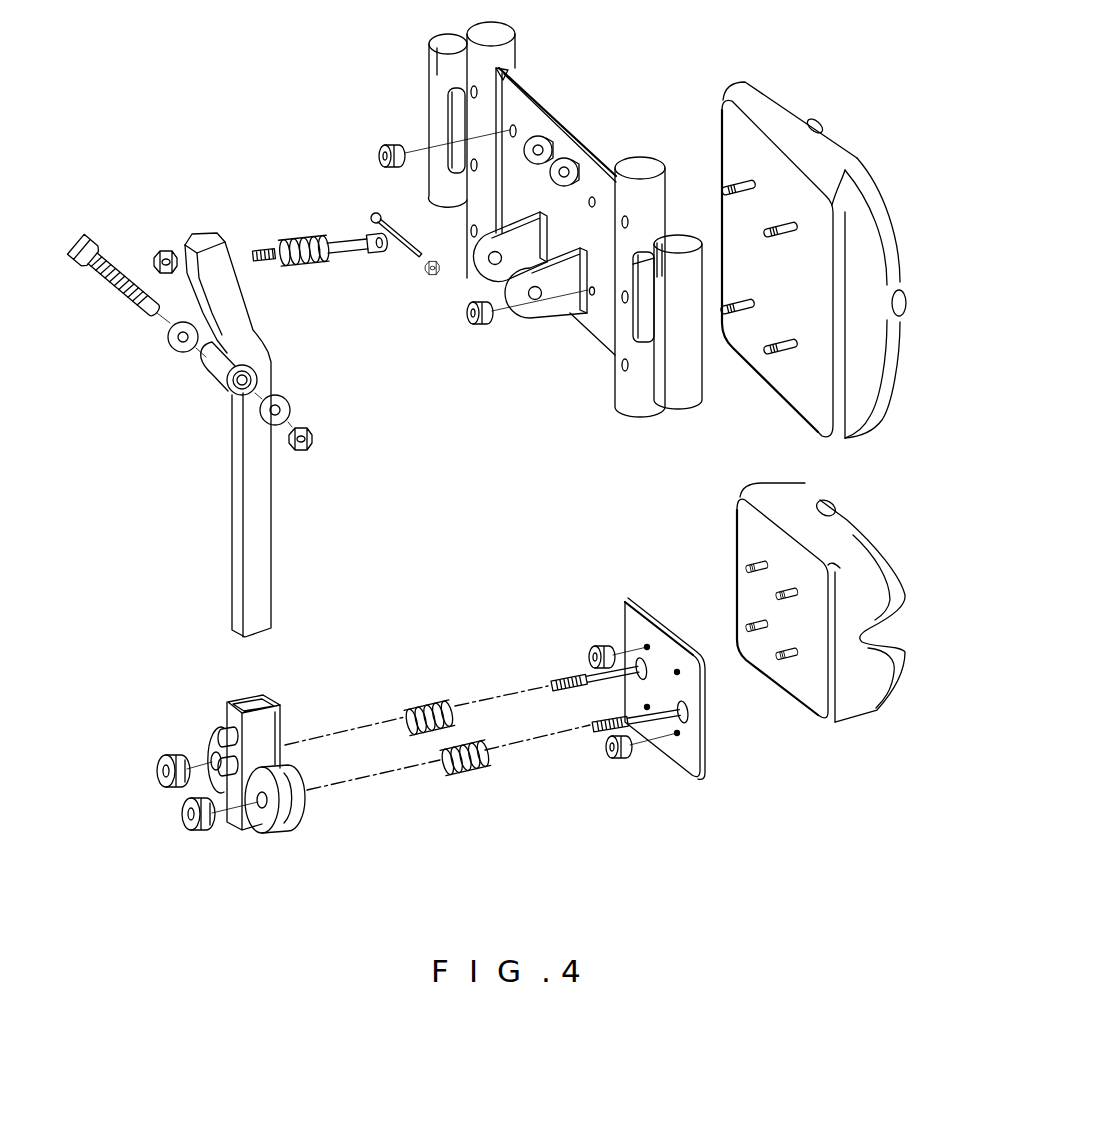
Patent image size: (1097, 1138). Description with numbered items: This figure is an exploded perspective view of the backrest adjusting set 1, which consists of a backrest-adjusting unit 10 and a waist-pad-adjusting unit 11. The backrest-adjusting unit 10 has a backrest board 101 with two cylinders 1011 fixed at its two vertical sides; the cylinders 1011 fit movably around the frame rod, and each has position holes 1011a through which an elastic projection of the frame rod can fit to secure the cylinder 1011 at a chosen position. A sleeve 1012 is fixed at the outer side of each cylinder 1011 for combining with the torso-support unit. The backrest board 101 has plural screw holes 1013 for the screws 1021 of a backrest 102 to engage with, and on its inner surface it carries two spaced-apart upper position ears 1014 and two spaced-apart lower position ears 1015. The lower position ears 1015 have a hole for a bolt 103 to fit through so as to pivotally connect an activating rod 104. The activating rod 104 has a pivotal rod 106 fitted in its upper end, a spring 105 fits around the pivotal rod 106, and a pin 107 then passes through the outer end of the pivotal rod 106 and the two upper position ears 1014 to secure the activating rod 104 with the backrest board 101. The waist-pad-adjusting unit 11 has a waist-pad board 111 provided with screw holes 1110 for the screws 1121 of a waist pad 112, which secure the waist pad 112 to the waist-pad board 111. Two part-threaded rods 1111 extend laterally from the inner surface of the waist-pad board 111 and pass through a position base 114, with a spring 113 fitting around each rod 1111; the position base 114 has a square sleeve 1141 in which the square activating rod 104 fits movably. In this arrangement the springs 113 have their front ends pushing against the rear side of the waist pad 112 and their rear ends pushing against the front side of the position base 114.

The backrest adjusting set 1 is at (227, 840).
The backrest-adjusting unit 10 is at (183, 513).
The waist-pad-adjusting unit 11 is at (147, 803).
The backrest board 101 is at (531, 95).
The backrest 102 is at (857, 155).
The bolt 103 is at (92, 240).
The activating rod 104 is at (270, 527).
The spring 105 is at (290, 233).
The pivotal rod 106 is at (347, 250).
The pin 107 is at (373, 213).
The cylinder 1011 is at (630, 392).
The position hole 1011a is at (620, 367).
The sleeve 1012 is at (688, 378).
The screw hole 1013 is at (510, 123).
The upper position ear 1014 is at (578, 160).
The lower position ear 1015 is at (553, 310).
The screw 1021 is at (730, 187).
The waist-pad board 111 is at (687, 753).
The screw hole 1110 is at (678, 675).
The part-threaded rod 1111 is at (585, 672).
The waist pad 112 is at (853, 700).
The screw 1121 is at (750, 563).
The spring 113 is at (472, 773).
The position base 114 is at (287, 730).
The square sleeve 1141 is at (225, 710).